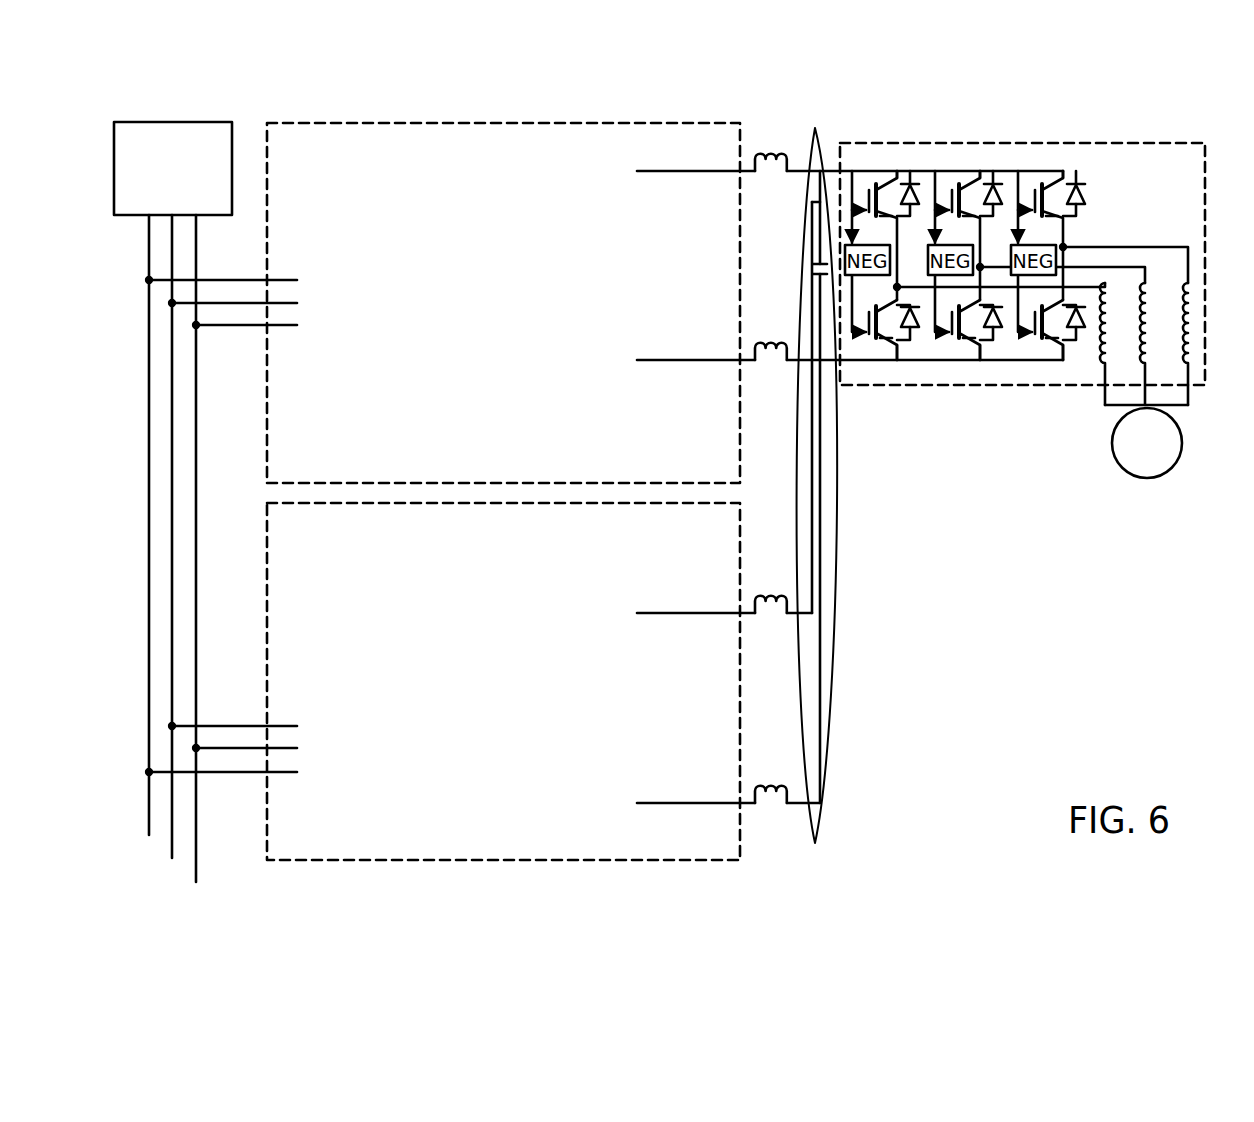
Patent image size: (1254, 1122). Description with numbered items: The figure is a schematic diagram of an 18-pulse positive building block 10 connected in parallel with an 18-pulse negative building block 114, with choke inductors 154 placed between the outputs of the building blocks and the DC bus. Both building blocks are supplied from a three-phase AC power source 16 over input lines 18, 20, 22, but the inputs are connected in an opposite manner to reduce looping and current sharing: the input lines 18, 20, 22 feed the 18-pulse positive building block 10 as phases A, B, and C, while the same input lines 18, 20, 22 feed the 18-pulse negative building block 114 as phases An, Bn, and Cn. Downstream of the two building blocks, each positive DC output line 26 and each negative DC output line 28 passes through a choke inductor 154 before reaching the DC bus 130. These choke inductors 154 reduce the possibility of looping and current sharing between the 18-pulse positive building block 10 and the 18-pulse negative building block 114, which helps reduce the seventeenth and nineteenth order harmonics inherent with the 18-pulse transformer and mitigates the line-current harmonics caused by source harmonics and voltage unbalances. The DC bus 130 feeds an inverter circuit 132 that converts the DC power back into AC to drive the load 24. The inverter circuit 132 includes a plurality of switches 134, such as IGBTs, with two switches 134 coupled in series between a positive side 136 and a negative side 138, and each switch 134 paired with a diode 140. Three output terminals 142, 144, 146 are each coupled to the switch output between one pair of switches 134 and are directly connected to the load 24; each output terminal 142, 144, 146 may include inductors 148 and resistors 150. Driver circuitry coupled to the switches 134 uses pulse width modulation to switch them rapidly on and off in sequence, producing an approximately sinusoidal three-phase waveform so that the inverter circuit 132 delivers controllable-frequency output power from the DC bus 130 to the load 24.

The three-phase AC power source 16 is at (173, 121).
The input line 18 is at (149, 581).
The input line 20 is at (172, 614).
The input line 22 is at (196, 645).
The 18-pulse positive building block 10 is at (267, 395).
The 18-pulse negative building block 114 is at (267, 531).
The positive DC output line 26 is at (757, 176).
The negative DC output line 28 is at (757, 365).
The choke inductor 154 is at (757, 160).
The DC bus 130 is at (814, 130).
The inverter circuit 132 is at (1104, 143).
The switch 134 is at (867, 193).
The positive side 136 is at (897, 173).
The negative side 138 is at (898, 363).
The diode 140 is at (916, 183).
The output terminal 142 is at (1114, 283).
The output terminal 144 is at (1154, 283).
The output terminal 146 is at (1196, 260).
The inductor 148 is at (1108, 305).
The resistor 150 is at (1108, 355).
The load 24 is at (1118, 470).